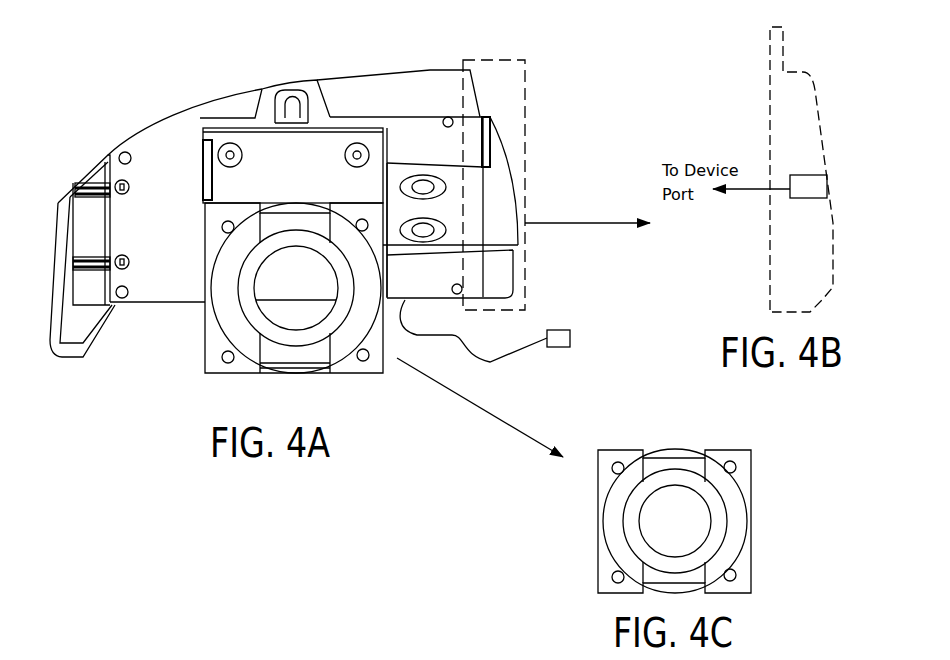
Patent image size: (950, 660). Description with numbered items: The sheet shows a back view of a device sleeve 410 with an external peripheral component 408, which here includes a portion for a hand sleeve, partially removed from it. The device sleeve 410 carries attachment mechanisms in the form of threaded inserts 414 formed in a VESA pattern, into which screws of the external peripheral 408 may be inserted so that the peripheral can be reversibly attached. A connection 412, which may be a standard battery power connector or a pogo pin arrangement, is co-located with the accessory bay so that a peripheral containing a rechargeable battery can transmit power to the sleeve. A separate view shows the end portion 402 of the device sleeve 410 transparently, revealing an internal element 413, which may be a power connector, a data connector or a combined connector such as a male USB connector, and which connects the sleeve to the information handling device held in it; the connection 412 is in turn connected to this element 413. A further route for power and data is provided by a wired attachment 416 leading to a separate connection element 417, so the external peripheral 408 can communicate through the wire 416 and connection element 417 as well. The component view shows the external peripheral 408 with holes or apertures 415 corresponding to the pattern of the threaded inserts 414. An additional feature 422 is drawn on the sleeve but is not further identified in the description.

In FIG. 4A, the device sleeve 410 is at (150, 112).
In FIG. 4A, the connection 412 is at (205, 168).
In FIG. 4A, the threaded inserts 414 is at (243, 155).
In FIG. 4A, the slot 422 is at (293, 102).
In FIG. 4A, the end portion 402 is at (497, 148).
In FIG. 4B, the end portion 402 is at (805, 123).
In FIG. 4A, the external peripheral component 408 is at (233, 303).
In FIG. 4C, the external peripheral component 408 is at (725, 515).
In FIG. 4B, the internal element 413 is at (815, 182).
In FIG. 4C, the holes or apertures 415 is at (623, 462).
In FIG. 4A, the wired attachment 416 is at (508, 356).
In FIG. 4A, the connection element 417 is at (560, 328).